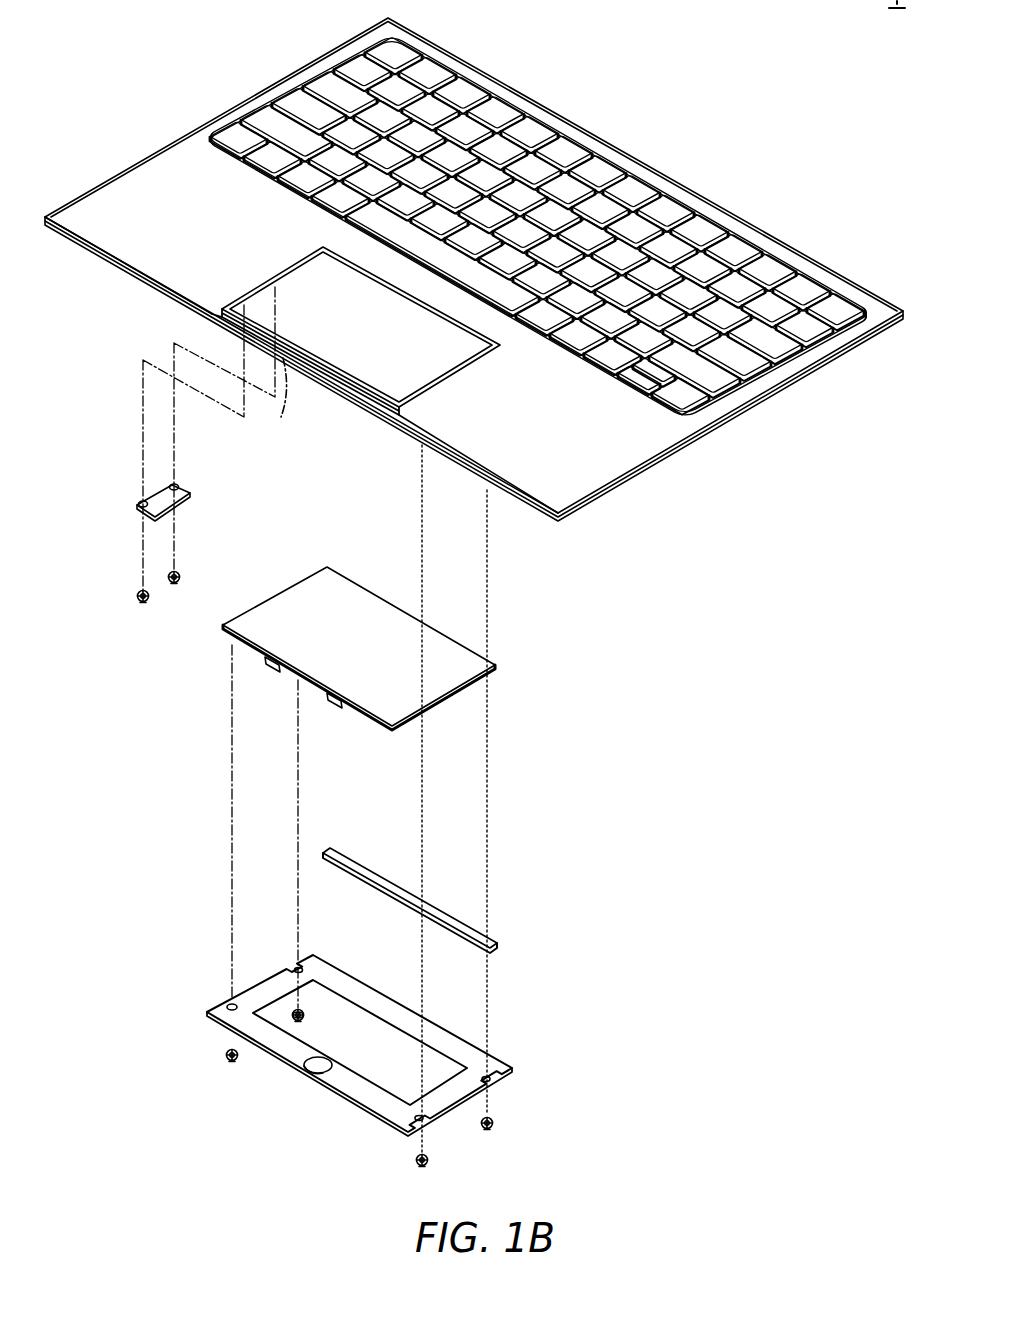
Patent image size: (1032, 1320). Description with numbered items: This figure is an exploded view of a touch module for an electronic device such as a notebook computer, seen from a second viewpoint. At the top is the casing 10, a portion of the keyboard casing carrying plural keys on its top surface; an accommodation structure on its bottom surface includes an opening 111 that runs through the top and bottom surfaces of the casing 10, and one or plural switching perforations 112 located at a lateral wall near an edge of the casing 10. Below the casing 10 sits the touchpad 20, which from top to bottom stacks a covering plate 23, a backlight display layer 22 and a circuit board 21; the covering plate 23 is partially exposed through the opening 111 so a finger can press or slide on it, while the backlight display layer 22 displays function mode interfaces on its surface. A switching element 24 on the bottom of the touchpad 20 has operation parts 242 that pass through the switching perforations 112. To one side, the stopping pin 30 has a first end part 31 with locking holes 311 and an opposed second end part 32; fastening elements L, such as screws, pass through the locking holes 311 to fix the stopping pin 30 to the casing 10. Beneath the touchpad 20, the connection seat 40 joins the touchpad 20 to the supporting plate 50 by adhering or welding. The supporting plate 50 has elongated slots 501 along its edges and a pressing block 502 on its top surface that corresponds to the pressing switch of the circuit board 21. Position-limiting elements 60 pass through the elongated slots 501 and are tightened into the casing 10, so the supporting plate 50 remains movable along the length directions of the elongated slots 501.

The casing 10 is at (474, 269).
The opening 111 is at (303, 303).
The switching perforation 112 is at (337, 390).
The stopping pin 30 is at (150, 477).
The first end part 31 is at (156, 492).
The locking hole 311 is at (143, 502).
The second end part 32 is at (183, 500).
The fastening element L is at (137, 597).
The touchpad 20 is at (383, 646).
The covering plate 23 is at (347, 598).
The circuit board 21 is at (383, 726).
The backlight display layer 22 is at (450, 702).
The switching element 24 is at (264, 661).
The operation part 242 is at (272, 668).
The connection seat 40 is at (375, 884).
The supporting plate 50 is at (382, 1045).
The elongated slot 501 is at (230, 1003).
The pressing block 502 is at (312, 1070).
The position-limiting element 60 is at (226, 1055).